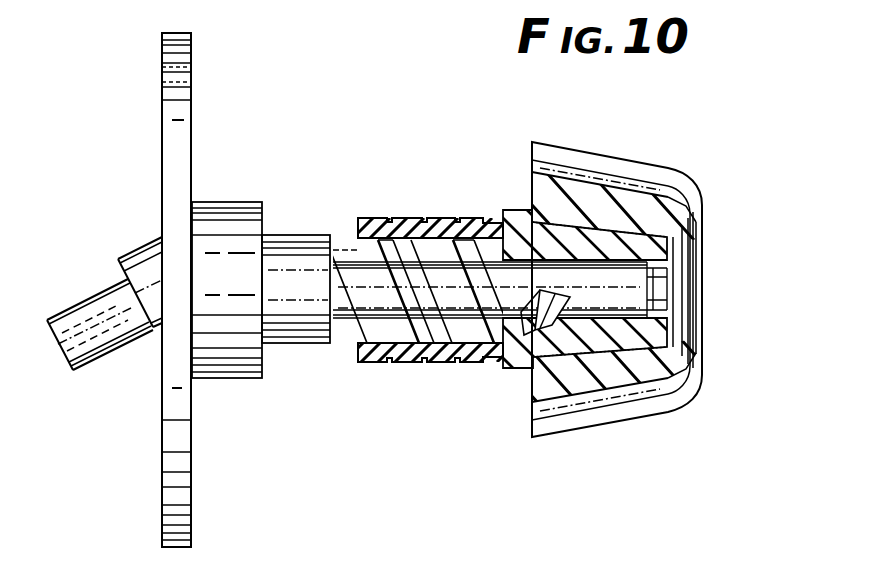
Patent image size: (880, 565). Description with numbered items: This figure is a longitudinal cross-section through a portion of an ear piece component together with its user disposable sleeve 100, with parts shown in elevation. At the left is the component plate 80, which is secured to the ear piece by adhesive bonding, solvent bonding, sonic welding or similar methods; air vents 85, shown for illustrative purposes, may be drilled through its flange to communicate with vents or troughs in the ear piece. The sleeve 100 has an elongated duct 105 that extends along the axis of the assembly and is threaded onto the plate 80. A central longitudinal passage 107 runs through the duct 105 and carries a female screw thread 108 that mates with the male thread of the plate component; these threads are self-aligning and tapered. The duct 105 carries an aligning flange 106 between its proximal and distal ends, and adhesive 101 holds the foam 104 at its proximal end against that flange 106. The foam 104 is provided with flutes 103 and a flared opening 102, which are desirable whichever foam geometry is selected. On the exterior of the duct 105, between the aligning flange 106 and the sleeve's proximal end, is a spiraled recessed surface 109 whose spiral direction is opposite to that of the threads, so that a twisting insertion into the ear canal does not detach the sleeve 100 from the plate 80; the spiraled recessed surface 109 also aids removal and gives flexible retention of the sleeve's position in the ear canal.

The component plate 80 is at (266, 152).
The air vents 85 is at (183, 77).
The sleeve 100 is at (618, 140).
The adhesive 101 is at (572, 415).
The flared opening 102 is at (700, 240).
The flutes 103 is at (558, 150).
The foam 104 is at (627, 405).
The duct 105 is at (372, 217).
The aligning flange 106 is at (530, 357).
The central longitudinal passage 107 is at (668, 188).
The female screw thread 108 is at (503, 210).
The spiraled recessed surface 109 is at (436, 216).